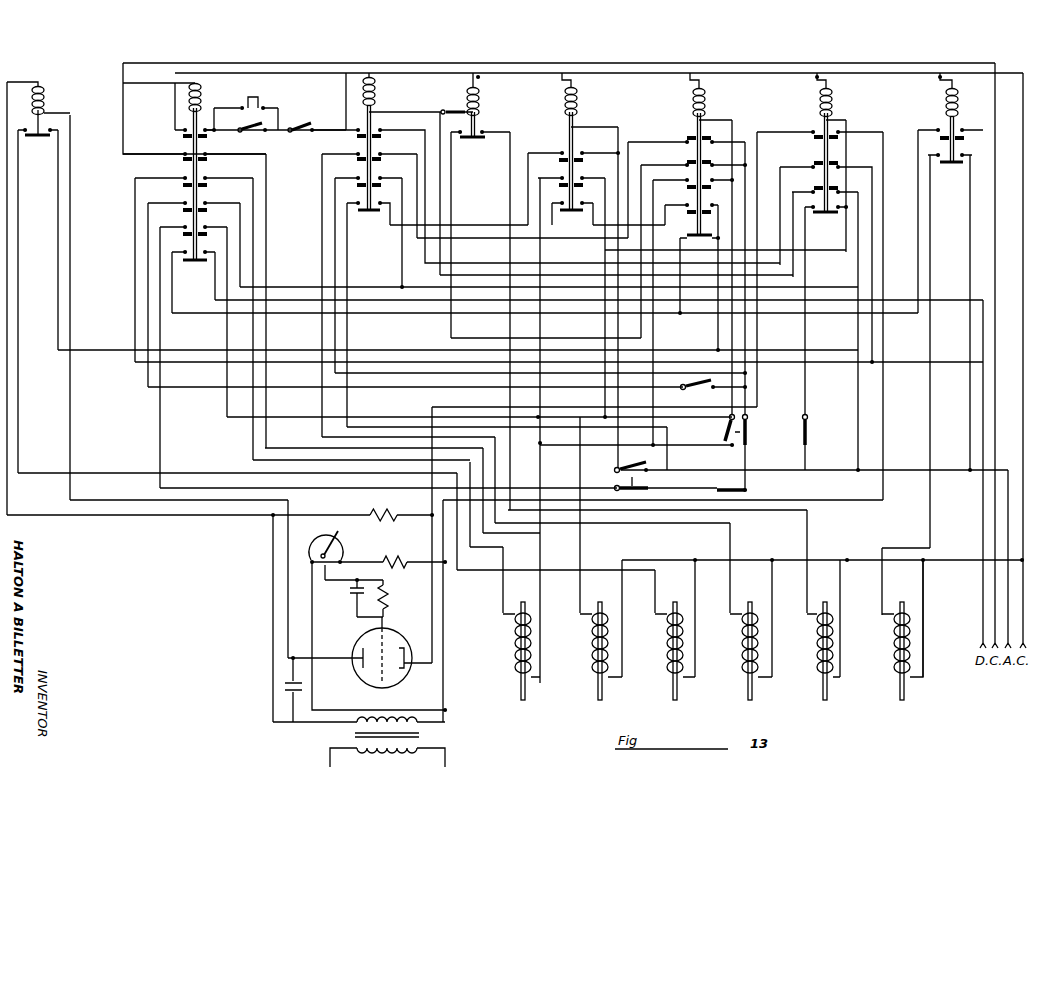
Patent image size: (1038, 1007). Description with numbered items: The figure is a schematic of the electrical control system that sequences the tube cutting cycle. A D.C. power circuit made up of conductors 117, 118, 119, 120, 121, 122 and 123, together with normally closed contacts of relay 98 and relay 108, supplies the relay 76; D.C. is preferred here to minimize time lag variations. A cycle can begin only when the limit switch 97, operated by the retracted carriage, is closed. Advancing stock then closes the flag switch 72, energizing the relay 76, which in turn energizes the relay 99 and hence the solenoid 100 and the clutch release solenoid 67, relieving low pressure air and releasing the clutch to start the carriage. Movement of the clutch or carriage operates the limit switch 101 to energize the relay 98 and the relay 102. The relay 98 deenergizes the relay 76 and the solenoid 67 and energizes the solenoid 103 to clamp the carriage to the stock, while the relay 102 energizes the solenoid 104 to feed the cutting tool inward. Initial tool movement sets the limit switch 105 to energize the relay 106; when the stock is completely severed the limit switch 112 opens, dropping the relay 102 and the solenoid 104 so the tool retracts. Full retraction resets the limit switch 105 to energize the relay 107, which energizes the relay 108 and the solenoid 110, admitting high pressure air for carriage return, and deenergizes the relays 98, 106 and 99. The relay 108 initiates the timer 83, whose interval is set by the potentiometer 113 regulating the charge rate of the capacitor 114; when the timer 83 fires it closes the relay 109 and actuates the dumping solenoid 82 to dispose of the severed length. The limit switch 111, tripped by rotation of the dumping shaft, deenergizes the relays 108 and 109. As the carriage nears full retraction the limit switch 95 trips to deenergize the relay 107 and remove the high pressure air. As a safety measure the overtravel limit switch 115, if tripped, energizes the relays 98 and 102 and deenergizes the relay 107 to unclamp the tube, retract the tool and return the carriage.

The relay 109 is at (40, 84).
The relay 76 is at (197, 83).
The conductor 117 is at (286, 63).
The conductor 118 is at (128, 85).
The conductor 119 is at (275, 138).
The flag switch 72 is at (252, 128).
The limit switch 97 is at (312, 124).
The conductor 120 is at (293, 131).
The relay 98 is at (376, 80).
The conductor 121 is at (410, 139).
The limit switch 112 is at (445, 110).
The relay 102 is at (478, 86).
The relay 106 is at (574, 87).
The relay 107 is at (703, 87).
The relay 108 is at (830, 87).
The relay 99 is at (955, 87).
The conductor 122 is at (873, 172).
The limit switch 101 is at (702, 386).
The overtravel limit switch 115 is at (749, 420).
The limit switch 111 is at (808, 425).
The limit switch 105 is at (614, 470).
The limit switch 95 is at (748, 491).
The conductor 123 is at (982, 517).
The potentiometer 113 is at (342, 545).
The capacitor 114 is at (352, 590).
The timer 83 is at (350, 639).
The clutch release solenoid 67 is at (515, 666).
The solenoid 110 is at (592, 666).
The dumping solenoid 82 is at (667, 666).
The solenoid 103 is at (742, 666).
The solenoid 104 is at (817, 666).
The solenoid 100 is at (894, 666).